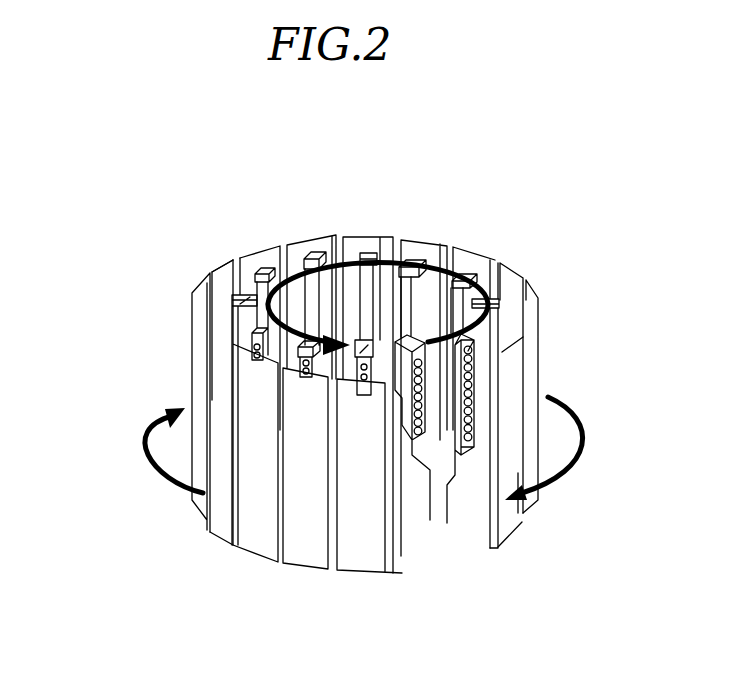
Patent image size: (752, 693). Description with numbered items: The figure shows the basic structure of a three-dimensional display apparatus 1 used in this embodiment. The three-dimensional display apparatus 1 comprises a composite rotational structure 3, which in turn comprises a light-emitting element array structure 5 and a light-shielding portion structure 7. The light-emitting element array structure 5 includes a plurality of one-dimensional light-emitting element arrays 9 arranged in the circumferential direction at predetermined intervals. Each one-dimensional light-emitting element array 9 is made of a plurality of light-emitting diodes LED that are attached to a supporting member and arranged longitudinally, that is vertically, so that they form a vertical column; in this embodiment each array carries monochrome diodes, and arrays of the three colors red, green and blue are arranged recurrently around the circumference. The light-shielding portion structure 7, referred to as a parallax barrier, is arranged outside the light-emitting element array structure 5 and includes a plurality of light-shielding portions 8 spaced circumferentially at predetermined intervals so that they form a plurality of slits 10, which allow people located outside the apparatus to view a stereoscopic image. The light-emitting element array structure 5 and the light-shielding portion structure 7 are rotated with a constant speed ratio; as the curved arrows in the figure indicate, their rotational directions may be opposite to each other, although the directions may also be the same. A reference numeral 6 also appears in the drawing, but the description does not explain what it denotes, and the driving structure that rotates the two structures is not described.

The three-dimensional display apparatus 1 is at (460, 227).
The composite rotational structure 3 is at (376, 234).
The light-emitting element array structure 5 is at (314, 255).
The light source unit 6 is at (352, 245).
The light-shielding portion structure 7 is at (215, 256).
The light-shielding portion 8 is at (272, 552).
The one-dimensional light-emitting element array 9 is at (305, 259).
The slit 10 is at (240, 295).
The light-emitting diode LED is at (413, 442).